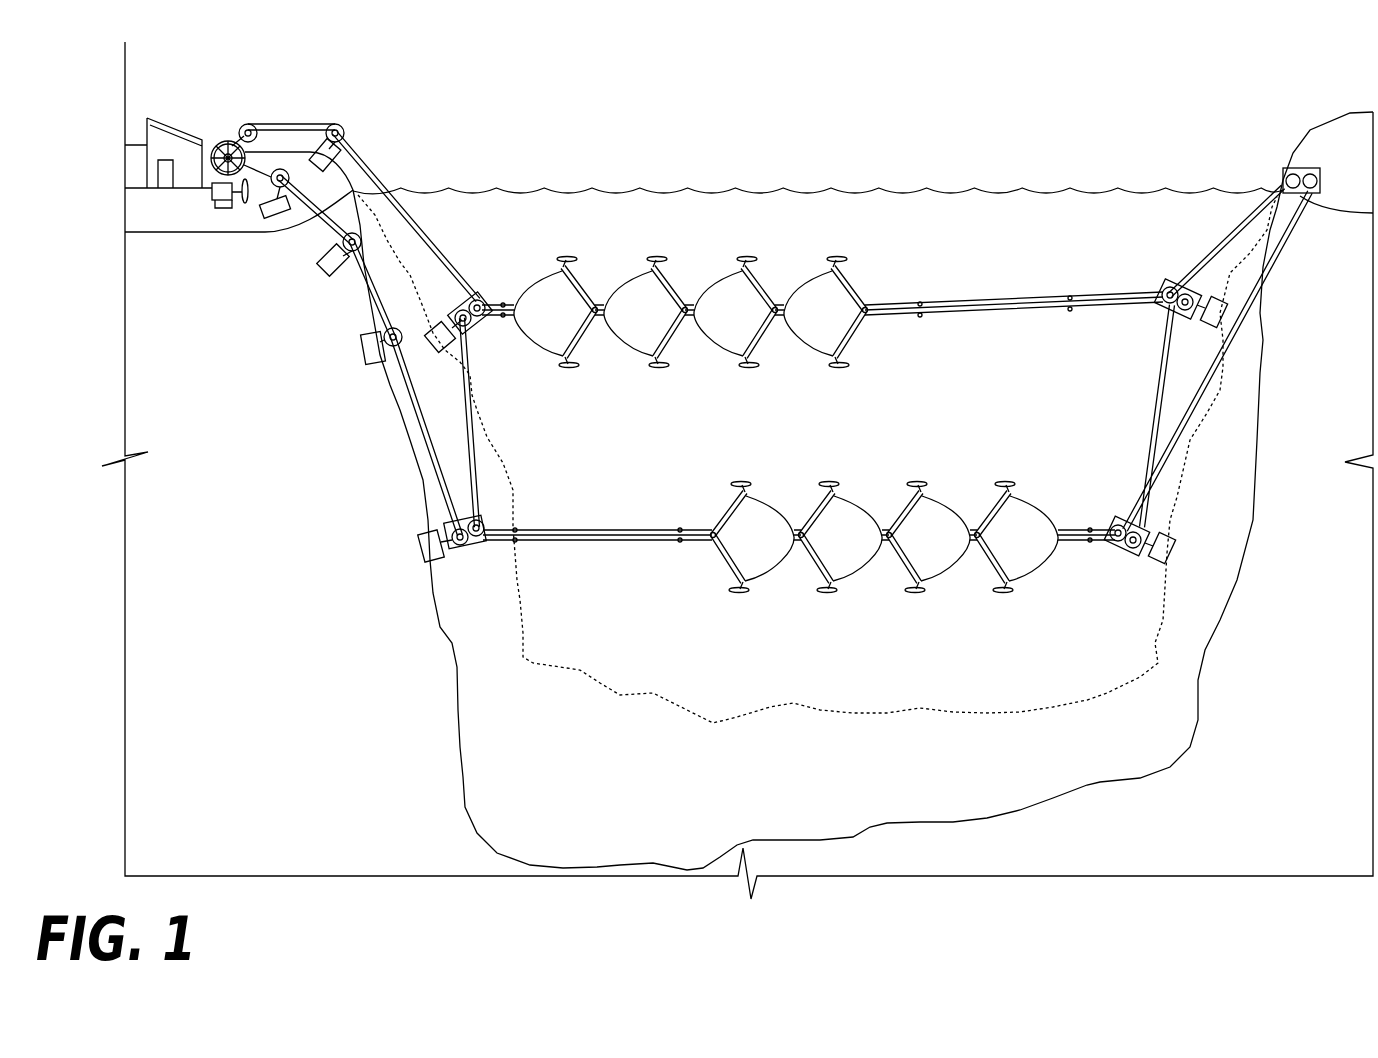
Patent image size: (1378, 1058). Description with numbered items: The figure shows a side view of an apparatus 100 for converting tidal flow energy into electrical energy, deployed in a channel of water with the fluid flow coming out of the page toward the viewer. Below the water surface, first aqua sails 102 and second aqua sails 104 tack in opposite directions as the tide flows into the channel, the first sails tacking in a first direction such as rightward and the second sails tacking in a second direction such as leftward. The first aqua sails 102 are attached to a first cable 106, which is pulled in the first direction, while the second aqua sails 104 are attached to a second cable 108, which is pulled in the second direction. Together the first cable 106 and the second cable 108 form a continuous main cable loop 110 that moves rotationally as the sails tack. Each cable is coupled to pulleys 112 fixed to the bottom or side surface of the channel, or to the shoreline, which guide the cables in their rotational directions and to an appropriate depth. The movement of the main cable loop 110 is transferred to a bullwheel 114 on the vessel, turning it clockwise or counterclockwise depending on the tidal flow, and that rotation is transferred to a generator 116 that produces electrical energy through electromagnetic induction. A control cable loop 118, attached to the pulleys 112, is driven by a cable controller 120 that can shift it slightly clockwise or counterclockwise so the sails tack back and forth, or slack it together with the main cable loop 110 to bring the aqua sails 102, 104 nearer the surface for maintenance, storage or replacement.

The apparatus 100 is at (739, 70).
The first aqua sails 102 is at (700, 252).
The second aqua sails 104 is at (887, 597).
The first cable 106 is at (950, 297).
The second cable 108 is at (577, 543).
The main cable loop 110 is at (425, 208).
The pulleys 112 is at (277, 207).
The bullwheel 114 is at (238, 146).
The generator 116 is at (220, 199).
The control cable loop 118 is at (487, 443).
The cable controller 120 is at (1287, 167).